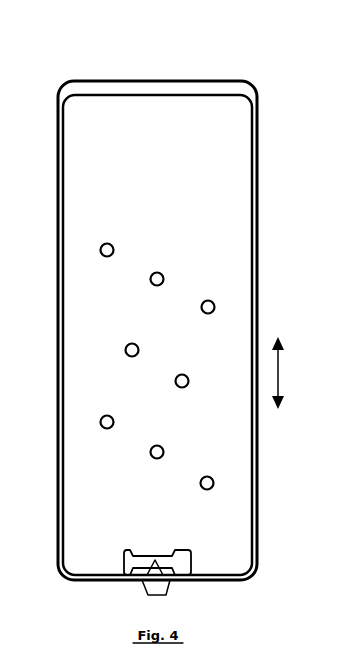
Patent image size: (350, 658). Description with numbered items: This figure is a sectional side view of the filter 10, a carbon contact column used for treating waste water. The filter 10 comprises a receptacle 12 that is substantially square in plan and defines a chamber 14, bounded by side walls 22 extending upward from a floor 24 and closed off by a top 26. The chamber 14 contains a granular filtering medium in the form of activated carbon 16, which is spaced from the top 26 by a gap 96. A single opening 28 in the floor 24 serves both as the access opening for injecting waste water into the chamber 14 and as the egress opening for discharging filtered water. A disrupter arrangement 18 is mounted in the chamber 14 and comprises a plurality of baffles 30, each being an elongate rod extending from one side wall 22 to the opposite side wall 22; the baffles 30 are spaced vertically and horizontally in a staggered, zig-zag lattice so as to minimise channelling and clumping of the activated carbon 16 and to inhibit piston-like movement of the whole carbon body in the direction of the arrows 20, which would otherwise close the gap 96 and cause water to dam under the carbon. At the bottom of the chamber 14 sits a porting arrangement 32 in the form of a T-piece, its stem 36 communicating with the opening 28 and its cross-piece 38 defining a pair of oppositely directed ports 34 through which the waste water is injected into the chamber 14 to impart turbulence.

The filter 10 is at (276, 64).
The receptacle 12 is at (258, 138).
The chamber 14 is at (260, 180).
The activated carbon 16 is at (240, 240).
The disrupter arrangement 18 is at (204, 287).
The arrows 20 is at (279, 374).
The side walls 22 is at (258, 482).
The floor 24 is at (214, 582).
The top 26 is at (110, 80).
The opening 28 is at (162, 596).
The baffles 30 is at (151, 282).
The porting arrangement 32 is at (200, 553).
The ports 34 is at (121, 563).
The stem 36 is at (140, 581).
The cross-piece 38 is at (108, 535).
The gap 96 is at (198, 80).